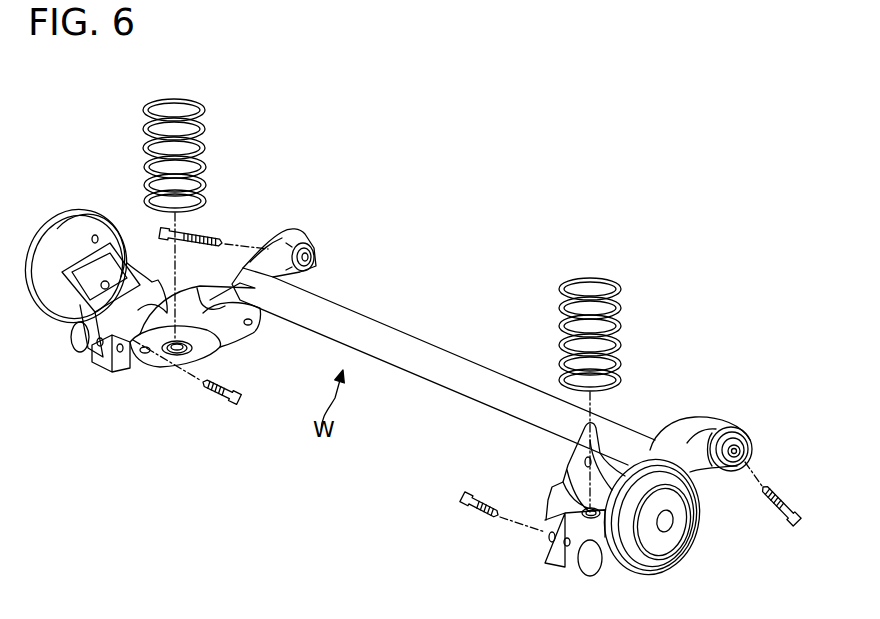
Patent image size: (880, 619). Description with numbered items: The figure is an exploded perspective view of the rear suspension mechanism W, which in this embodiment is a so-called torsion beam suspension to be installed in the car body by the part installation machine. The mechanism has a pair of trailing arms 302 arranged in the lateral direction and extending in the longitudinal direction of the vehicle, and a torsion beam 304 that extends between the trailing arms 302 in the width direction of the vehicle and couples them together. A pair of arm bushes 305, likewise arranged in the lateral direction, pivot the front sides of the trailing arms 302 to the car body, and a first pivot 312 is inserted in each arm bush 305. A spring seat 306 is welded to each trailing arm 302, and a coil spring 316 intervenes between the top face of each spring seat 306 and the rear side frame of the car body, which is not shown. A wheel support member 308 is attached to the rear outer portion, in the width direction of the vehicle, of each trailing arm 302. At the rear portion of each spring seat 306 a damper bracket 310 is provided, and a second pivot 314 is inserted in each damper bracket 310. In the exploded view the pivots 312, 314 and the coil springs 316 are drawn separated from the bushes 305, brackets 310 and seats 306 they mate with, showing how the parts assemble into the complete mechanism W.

The trailing arm 302 is at (262, 258).
The torsion beam 304 is at (427, 378).
The arm bush 305 is at (311, 243).
The spring seat 306 is at (222, 347).
The wheel support member 308 is at (32, 318).
The damper bracket 310 is at (122, 363).
The first pivot 312 is at (165, 229).
The second pivot 314 is at (217, 397).
The coil spring 316 is at (197, 110).